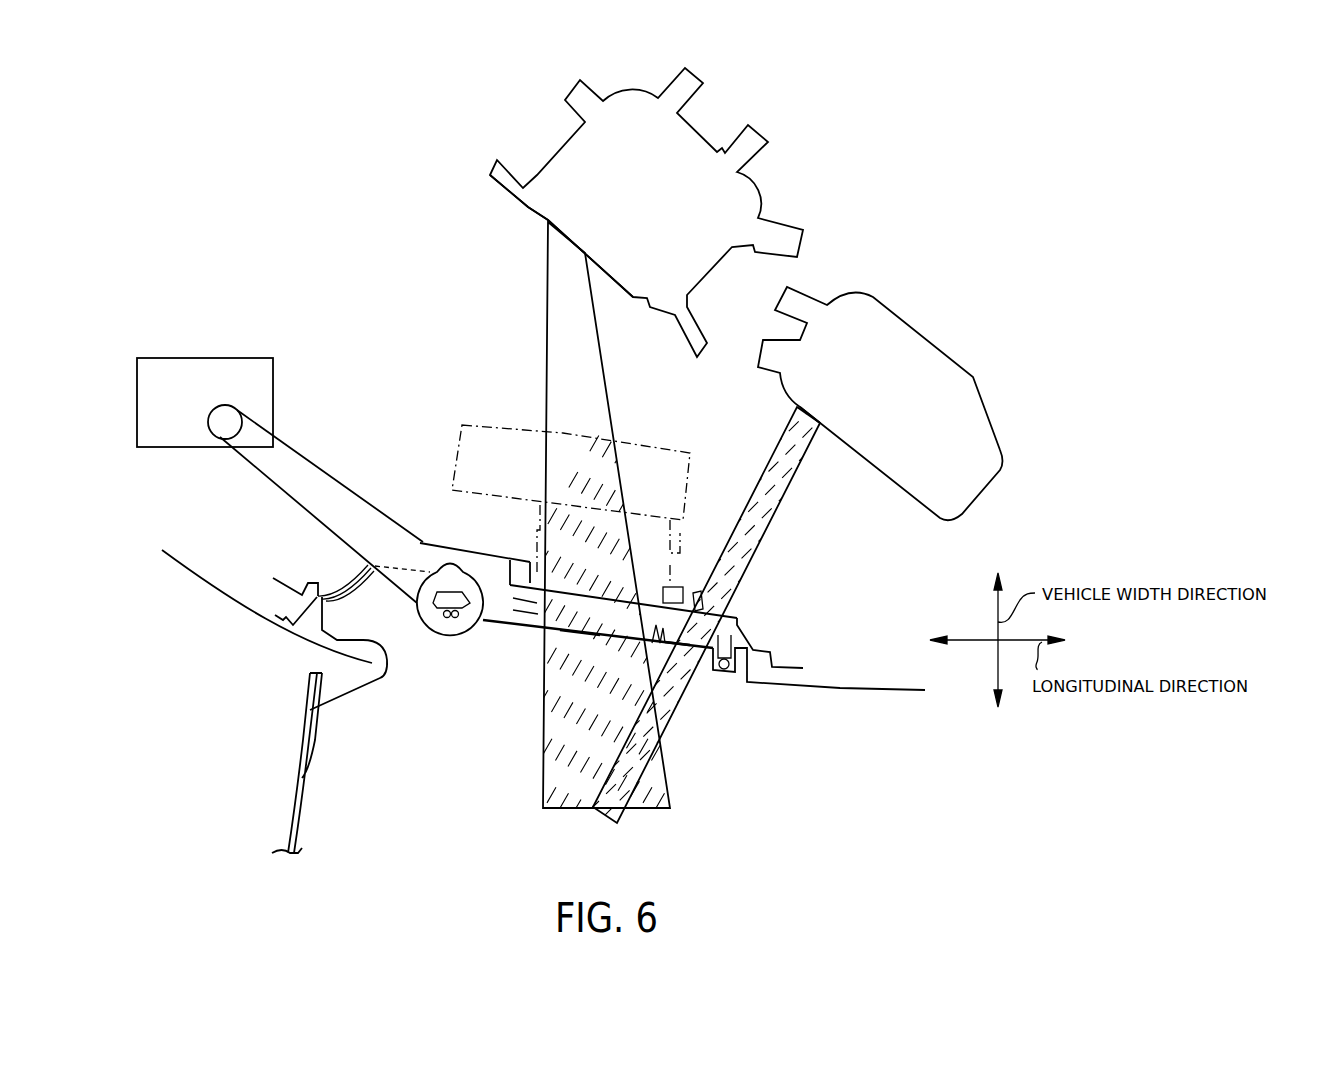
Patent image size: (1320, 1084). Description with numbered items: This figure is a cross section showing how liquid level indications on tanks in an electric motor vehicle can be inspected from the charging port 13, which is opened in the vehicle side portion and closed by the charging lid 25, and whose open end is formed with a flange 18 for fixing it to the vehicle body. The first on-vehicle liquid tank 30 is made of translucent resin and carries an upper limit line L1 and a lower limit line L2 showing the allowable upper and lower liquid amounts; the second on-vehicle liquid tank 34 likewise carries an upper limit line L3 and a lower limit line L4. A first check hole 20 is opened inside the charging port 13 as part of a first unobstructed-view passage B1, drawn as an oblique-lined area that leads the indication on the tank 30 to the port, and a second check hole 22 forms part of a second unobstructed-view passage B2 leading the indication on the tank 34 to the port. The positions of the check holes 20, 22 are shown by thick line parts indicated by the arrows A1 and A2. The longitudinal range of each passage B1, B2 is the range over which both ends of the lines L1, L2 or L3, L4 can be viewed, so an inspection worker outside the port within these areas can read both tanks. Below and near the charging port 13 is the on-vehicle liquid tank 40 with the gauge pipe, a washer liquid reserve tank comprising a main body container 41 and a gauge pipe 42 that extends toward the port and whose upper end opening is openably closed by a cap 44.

The first on-vehicle liquid tank 30 is at (556, 152).
The second on-vehicle liquid tank 34 is at (921, 333).
The upper limit line L1 is at (567, 236).
The lower limit line L2 is at (578, 252).
The upper limit line L3 is at (845, 390).
The lower limit line L4 is at (813, 410).
The first unobstructed-view passage B1 is at (548, 320).
The second unobstructed-view passage B2 is at (787, 495).
The on-vehicle liquid tank with the gauge pipe 40 is at (205, 401).
The main body container 41 is at (175, 447).
The gauge pipe 42 is at (335, 483).
The cap 44 is at (450, 637).
The first check hole 20 is at (578, 632).
The second check hole 22 is at (737, 590).
The flange 18 is at (792, 670).
The charging port 13 is at (373, 572).
The charging lid 25 is at (285, 810).
The arrow A1 is at (593, 648).
The arrow A2 is at (679, 658).